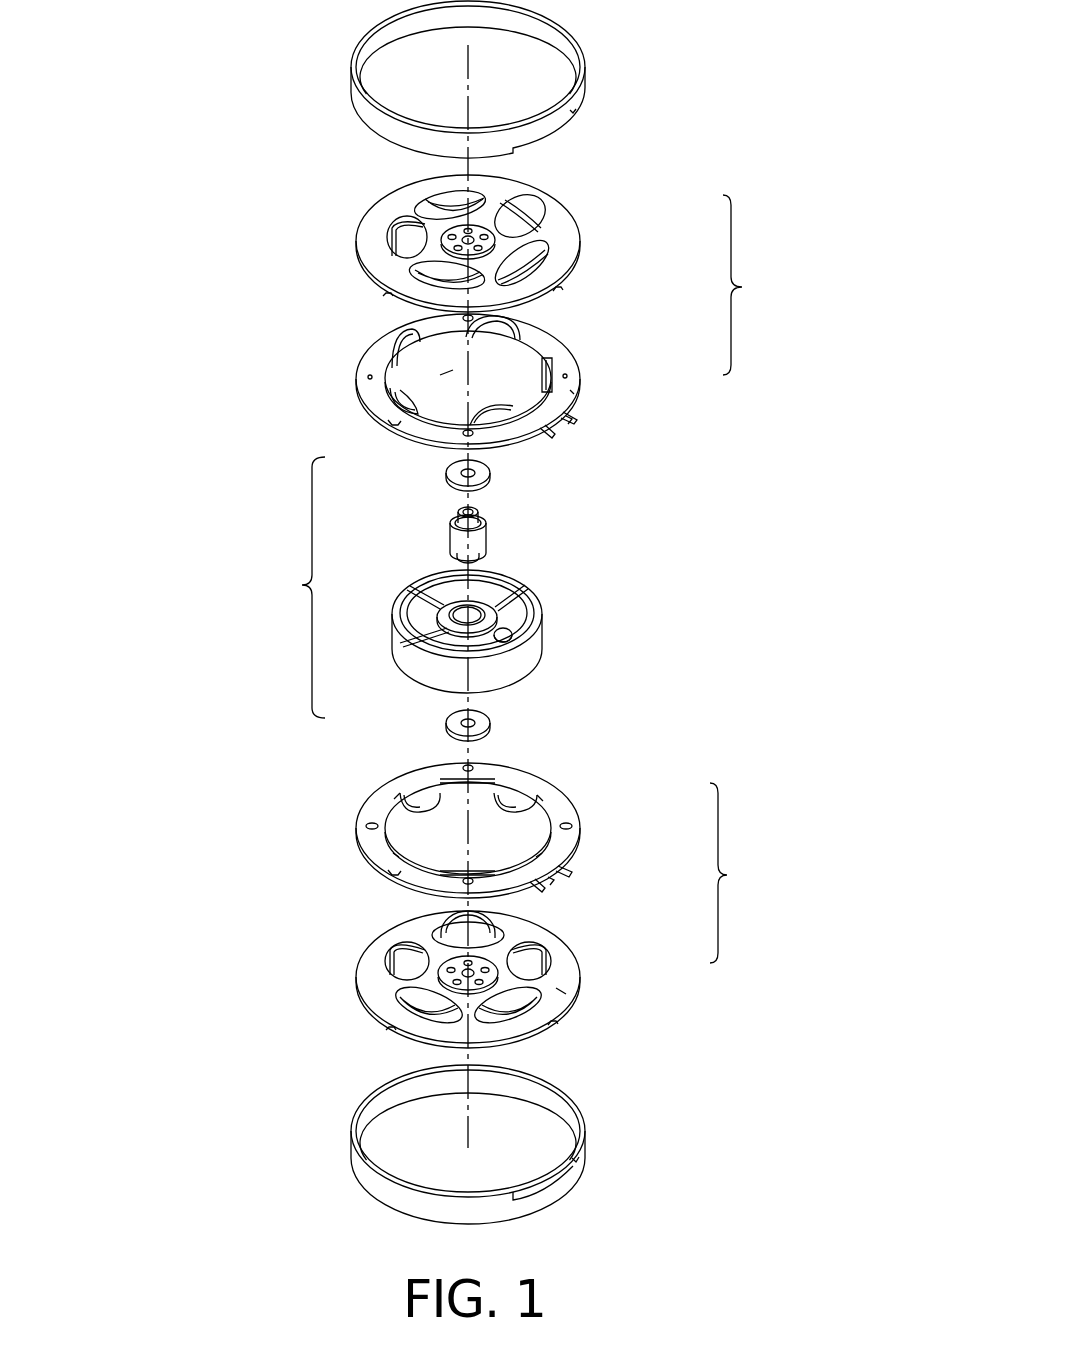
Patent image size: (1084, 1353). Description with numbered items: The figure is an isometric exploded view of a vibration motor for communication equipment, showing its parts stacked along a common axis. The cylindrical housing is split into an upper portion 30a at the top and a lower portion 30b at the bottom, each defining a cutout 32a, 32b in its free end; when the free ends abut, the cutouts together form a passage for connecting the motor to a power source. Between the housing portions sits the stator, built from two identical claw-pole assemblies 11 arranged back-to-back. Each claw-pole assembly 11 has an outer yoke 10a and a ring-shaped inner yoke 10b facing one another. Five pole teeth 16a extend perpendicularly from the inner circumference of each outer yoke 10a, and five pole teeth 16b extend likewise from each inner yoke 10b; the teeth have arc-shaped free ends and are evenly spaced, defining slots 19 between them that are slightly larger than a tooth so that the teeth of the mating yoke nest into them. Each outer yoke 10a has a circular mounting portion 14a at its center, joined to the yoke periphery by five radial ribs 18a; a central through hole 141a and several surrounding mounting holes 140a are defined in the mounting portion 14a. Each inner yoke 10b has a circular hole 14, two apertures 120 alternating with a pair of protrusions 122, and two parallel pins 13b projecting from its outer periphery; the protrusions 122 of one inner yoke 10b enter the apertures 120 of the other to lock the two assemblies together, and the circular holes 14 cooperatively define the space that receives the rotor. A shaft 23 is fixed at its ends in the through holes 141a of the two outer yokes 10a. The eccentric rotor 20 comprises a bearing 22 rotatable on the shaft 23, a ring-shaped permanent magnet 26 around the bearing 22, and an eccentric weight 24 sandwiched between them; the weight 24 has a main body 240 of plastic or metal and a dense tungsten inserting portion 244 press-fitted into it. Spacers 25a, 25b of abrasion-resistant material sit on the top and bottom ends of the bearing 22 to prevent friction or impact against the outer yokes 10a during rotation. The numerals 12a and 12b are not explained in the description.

The upper portion 30a is at (568, 51).
The cutout 32a is at (573, 115).
The outer yoke 10a is at (584, 220).
The pole teeth 16a is at (438, 203).
The mounting portion 14a is at (427, 243).
The mounting holes 140a is at (478, 270).
The through hole 141a is at (455, 240).
The ribs 18a is at (484, 198).
The slots 19 is at (427, 927).
The periphery of first stator plate 12a is at (565, 990).
The inner yoke 10b is at (592, 386).
The apertures 120 is at (463, 317).
The protrusions 122 is at (566, 375).
The pole teeth 16b is at (402, 350).
The circular hole 14 is at (453, 370).
The periphery of ring 12b is at (573, 393).
The pins 13b is at (570, 420).
The claw-pole assemblies 11 is at (740, 579).
The eccentric rotor 20 is at (295, 587).
The spacer 25a is at (450, 475).
The shaft 23 is at (488, 521).
The bearing 22 is at (450, 548).
The eccentric weight 24 is at (396, 658).
The permanent magnet 26 is at (445, 645).
The main body 240 is at (443, 607).
The inserting portion 244 is at (512, 631).
The spacer 25b is at (450, 722).
The lower portion 30b is at (570, 1117).
The cutout 32b is at (560, 1172).